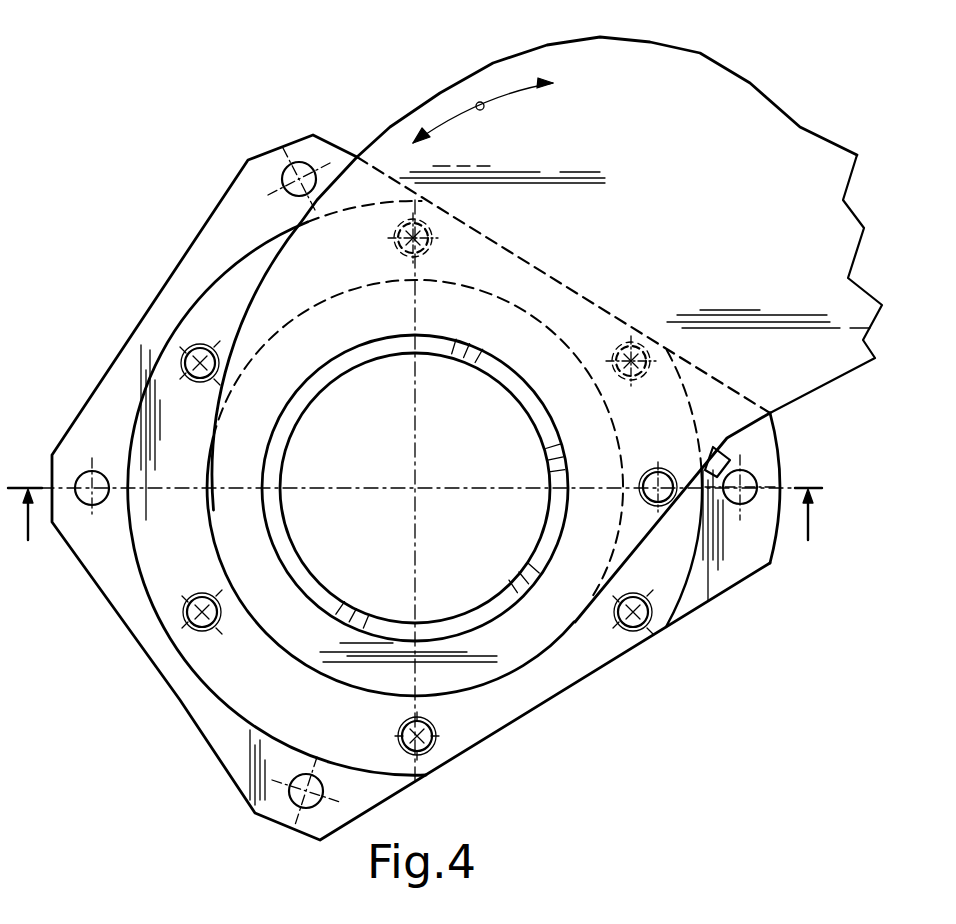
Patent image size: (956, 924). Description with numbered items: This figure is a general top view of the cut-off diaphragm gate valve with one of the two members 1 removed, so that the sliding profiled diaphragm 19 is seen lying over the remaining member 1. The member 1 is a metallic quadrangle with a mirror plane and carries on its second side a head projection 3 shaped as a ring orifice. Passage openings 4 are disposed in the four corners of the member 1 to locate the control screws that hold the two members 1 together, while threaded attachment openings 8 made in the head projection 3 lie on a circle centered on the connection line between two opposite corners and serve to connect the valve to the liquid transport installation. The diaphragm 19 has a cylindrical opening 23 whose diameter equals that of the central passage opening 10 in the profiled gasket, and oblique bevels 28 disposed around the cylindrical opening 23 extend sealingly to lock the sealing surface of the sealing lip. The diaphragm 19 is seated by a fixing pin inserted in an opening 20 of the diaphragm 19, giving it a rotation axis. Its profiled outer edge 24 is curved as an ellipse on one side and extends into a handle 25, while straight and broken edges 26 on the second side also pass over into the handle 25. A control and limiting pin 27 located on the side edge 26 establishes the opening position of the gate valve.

The member 1 is at (197, 288).
The head projection 3 is at (133, 432).
The passage openings 4 is at (90, 470).
The threaded attachment openings 8 is at (184, 605).
The central passage opening 10 is at (423, 569).
The profiled diaphragm 19 is at (750, 130).
The opening 20 is at (683, 603).
The cylindrical opening 23 is at (473, 583).
The profiled outer edge 24 is at (385, 130).
The handle 25 is at (813, 347).
The straight and broken edges 26 is at (787, 400).
The control and limiting pin 27 is at (713, 478).
The oblique bevels 28 is at (540, 563).